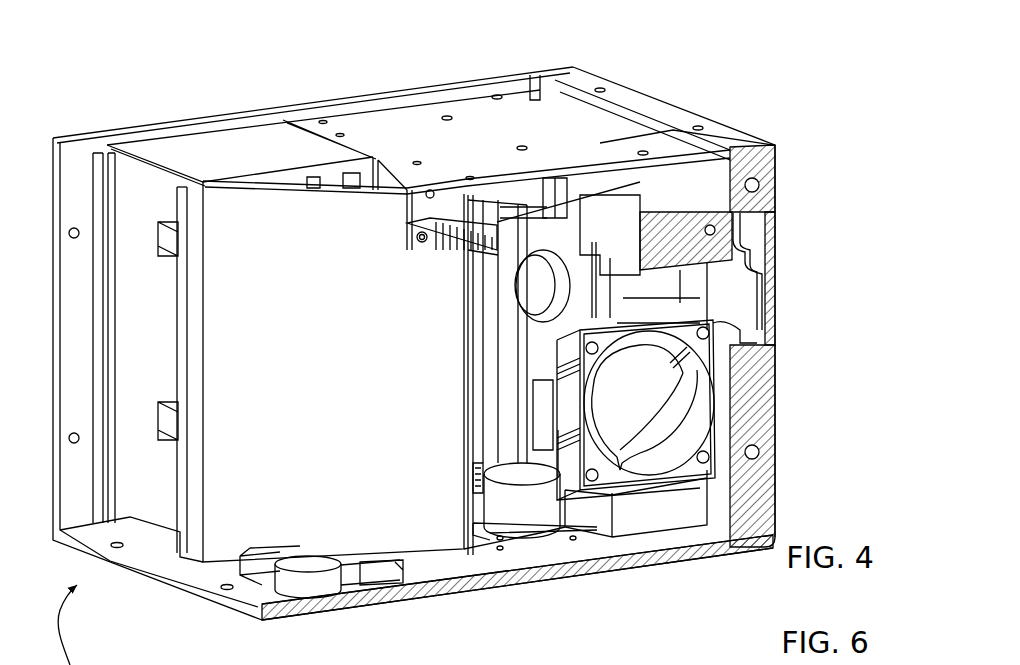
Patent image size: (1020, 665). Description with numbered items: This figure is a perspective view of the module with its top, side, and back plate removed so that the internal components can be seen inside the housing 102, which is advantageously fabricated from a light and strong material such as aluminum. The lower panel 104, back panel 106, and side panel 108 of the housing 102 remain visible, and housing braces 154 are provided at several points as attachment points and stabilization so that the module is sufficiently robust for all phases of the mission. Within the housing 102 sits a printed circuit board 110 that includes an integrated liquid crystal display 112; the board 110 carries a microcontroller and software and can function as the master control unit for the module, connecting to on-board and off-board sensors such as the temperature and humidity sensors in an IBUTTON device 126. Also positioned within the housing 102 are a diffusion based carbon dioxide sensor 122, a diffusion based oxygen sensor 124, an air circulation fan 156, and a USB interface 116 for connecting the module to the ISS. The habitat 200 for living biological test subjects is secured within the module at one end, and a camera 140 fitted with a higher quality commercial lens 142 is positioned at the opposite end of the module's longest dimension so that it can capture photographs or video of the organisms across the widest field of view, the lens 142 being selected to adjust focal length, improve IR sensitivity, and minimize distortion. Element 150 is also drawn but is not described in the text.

The housing 102 is at (88, 133).
The lower panel 104 is at (580, 562).
The back panel 106 is at (170, 130).
The side panel 108 is at (748, 507).
The printed circuit board 110 is at (400, 133).
The liquid crystal display 112 is at (420, 200).
The USB interface 116 is at (738, 265).
The carbon dioxide sensor 122 is at (480, 370).
The oxygen sensor 124 is at (527, 515).
The IBUTTON device 126 is at (313, 587).
The camera 140 is at (548, 330).
The lens 142 is at (560, 275).
The circuit board panel 150 is at (401, 497).
The housing braces 154 is at (653, 213).
The air circulation fan 156 is at (628, 403).
The habitat 200 is at (152, 482).